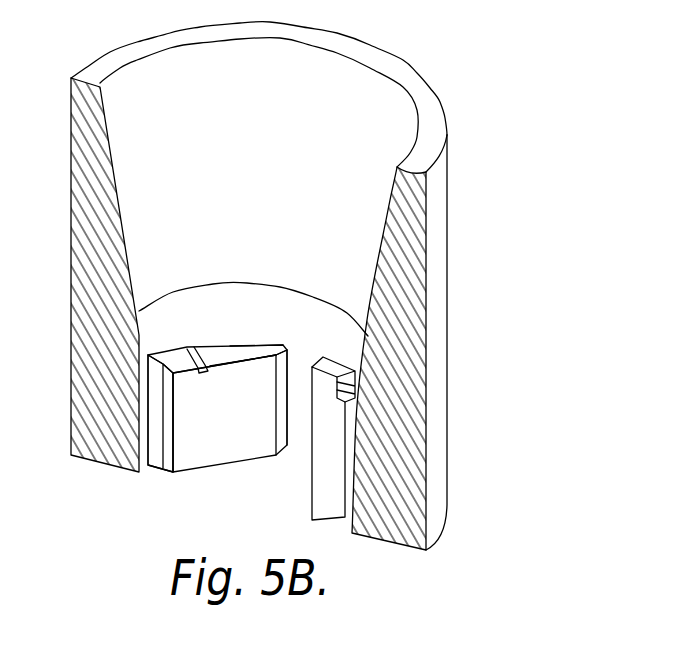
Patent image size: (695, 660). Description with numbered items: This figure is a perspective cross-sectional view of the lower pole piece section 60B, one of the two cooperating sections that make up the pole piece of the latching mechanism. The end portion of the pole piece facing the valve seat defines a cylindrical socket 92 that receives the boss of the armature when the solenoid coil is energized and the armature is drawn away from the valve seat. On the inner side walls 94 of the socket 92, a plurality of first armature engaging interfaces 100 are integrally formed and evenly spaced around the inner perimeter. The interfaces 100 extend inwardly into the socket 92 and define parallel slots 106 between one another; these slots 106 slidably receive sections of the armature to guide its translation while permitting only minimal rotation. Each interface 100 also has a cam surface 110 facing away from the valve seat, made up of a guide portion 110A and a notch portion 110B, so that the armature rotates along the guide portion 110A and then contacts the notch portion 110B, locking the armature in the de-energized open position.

The lower pole piece section 60B is at (448, 207).
The cylindrical socket 92 is at (165, 487).
The inner side walls 94 is at (163, 352).
The first armature engaging interface 100 is at (195, 417).
The slot 106 is at (298, 407).
The cam surface 110 is at (193, 340).
The guide portion 110A is at (258, 354).
The notch portion 110B is at (233, 355).